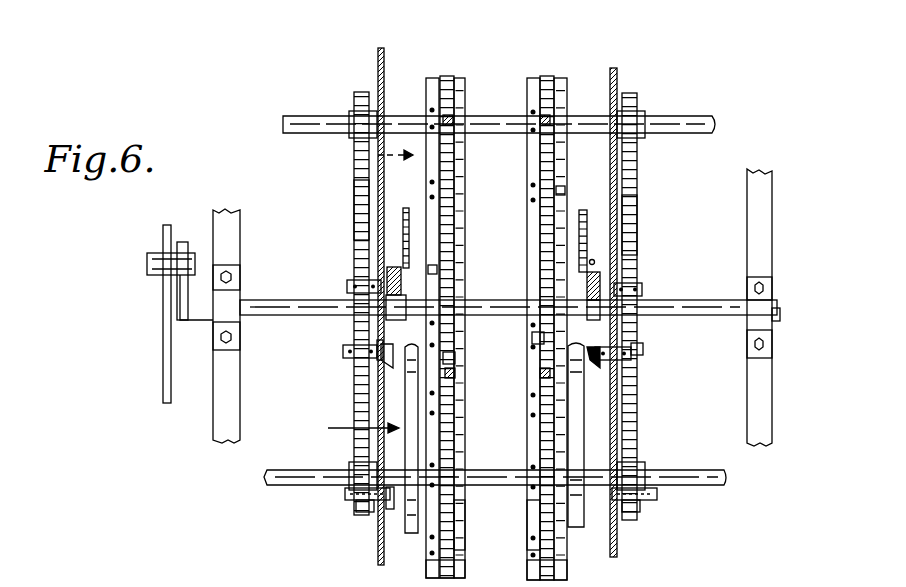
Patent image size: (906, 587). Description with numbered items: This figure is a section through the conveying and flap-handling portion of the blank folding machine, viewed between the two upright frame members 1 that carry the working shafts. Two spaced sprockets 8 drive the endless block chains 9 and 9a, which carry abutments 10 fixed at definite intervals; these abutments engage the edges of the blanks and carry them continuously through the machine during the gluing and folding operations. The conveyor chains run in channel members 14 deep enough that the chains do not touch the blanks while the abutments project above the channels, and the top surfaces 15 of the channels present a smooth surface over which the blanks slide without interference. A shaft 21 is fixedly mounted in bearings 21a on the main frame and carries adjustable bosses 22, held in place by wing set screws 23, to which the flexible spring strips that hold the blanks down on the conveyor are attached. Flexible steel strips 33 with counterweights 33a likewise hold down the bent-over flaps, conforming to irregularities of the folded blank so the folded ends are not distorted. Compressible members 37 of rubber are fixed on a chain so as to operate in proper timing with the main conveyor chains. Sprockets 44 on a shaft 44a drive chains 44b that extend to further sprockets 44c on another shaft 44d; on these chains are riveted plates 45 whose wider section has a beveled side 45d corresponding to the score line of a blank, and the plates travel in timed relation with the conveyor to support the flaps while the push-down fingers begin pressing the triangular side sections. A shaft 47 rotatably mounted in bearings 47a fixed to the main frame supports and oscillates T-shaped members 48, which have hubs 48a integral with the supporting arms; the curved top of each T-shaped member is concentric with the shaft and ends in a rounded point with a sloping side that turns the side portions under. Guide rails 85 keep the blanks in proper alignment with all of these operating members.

The frame upright 1 is at (213, 427).
The sprockets 8 is at (437, 163).
The endless block chain 9 is at (443, 357).
The endless block chain 9a is at (537, 338).
The abutments 10 is at (453, 372).
The channel members 14 is at (520, 525).
The top surfaces 15 is at (520, 562).
The shaft 21 is at (671, 581).
The bearings 21a is at (190, 586).
The bosses 22 is at (317, 582).
The wing set screws 23 is at (579, 582).
The flexible steel strips 33 is at (438, 164).
The counterweights 33a is at (455, 193).
The compressible members 37 is at (384, 265).
The sprockets 44 is at (356, 112).
The shaft 44a is at (300, 133).
The chains 44b is at (352, 205).
The sprockets 44c is at (340, 487).
The shaft 44d is at (725, 487).
The plates 45 is at (349, 283).
The beveled side 45d is at (382, 365).
The shaft 47 is at (310, 318).
The bearings 47a is at (240, 292).
The T-shaped members 48 is at (407, 208).
The hubs 48a is at (377, 334).
The guide rails 85 is at (386, 62).